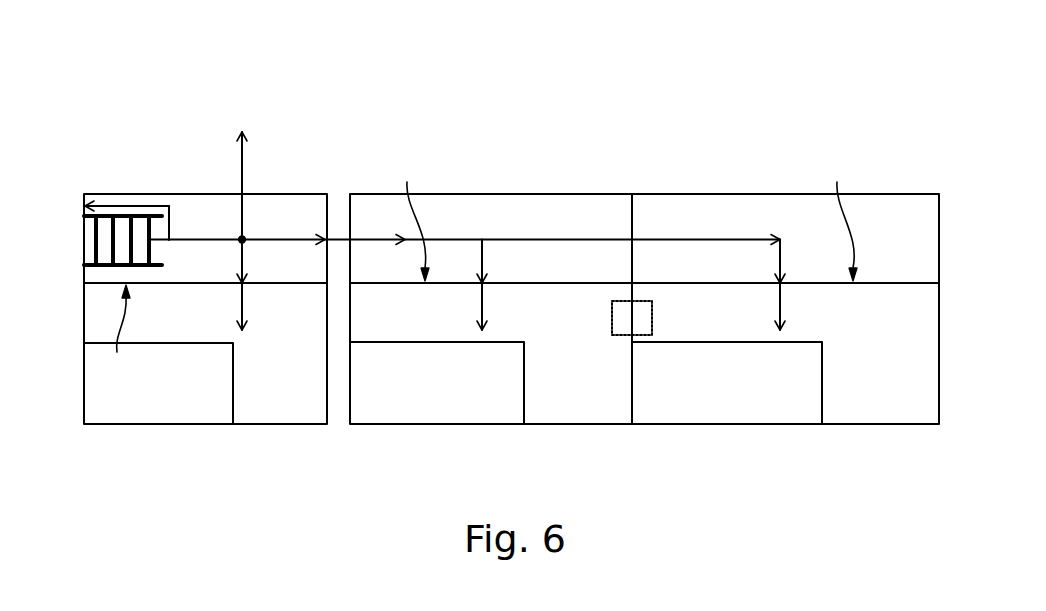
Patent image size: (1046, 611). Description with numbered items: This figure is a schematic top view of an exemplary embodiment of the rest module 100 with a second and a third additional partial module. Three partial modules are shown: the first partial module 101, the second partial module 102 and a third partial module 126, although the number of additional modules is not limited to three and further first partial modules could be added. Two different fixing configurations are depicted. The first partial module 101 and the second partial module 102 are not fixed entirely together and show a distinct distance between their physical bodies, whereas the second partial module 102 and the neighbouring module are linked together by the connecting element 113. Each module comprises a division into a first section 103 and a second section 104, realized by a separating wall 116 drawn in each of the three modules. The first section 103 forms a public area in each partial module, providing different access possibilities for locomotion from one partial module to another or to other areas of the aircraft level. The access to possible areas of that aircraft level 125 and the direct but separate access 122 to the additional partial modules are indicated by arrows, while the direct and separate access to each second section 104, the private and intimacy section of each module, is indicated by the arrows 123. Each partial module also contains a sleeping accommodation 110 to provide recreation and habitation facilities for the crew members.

The rest module 100 is at (149, 95).
The first partial module 101 is at (302, 403).
The second partial module 102 is at (612, 402).
The first section 103 is at (213, 207).
The second section 104 is at (250, 403).
The sleeping accommodation 110 is at (84, 229).
The connecting element 113 is at (623, 307).
The separating wall 116 is at (484, 265).
The access to the additional partial modules 122 is at (293, 240).
The access to each second section 123 is at (247, 307).
The access to possible areas of the aircraft level 125 is at (127, 206).
The third partial module 126 is at (722, 402).